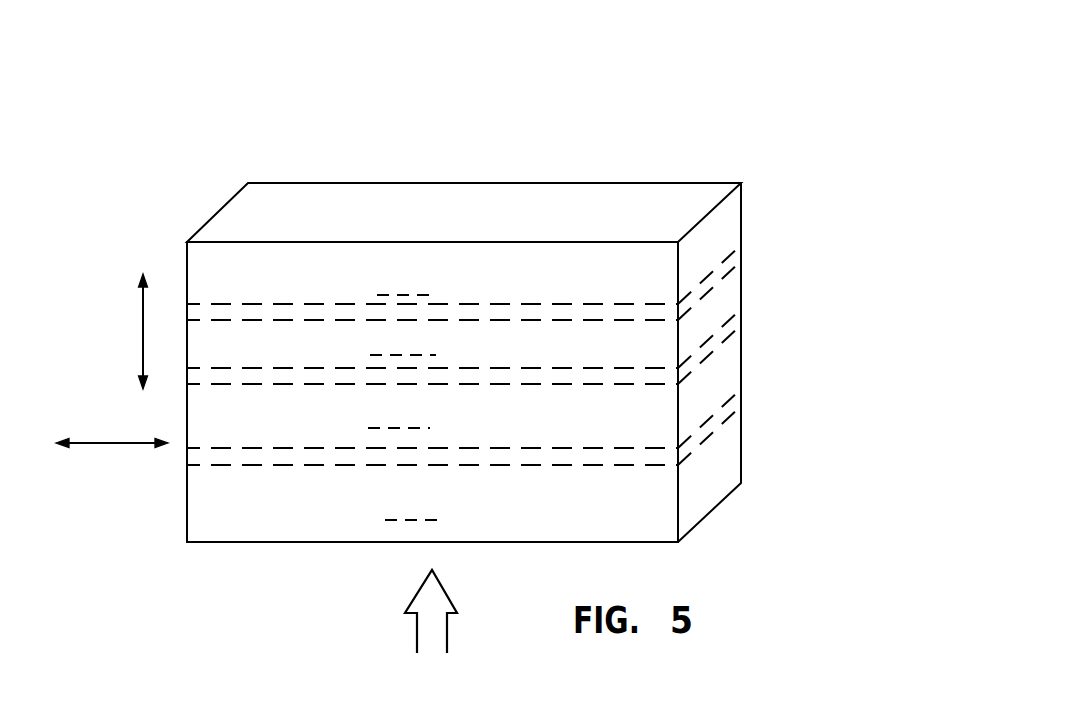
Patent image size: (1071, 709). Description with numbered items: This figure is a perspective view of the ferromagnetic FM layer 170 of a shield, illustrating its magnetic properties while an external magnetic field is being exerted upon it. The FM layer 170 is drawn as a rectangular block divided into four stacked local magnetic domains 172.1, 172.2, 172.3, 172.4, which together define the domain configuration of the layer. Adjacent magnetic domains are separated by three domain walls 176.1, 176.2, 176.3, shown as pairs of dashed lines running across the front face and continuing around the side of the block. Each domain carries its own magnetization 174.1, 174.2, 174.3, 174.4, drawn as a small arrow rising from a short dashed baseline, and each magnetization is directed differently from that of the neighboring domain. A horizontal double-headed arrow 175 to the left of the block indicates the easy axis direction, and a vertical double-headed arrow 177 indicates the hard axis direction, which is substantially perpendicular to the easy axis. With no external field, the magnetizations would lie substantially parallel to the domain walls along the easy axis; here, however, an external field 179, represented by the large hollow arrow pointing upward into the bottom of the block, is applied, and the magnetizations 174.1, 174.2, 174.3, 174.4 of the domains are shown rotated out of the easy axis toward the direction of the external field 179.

The FM layer 170 is at (684, 153).
The local magnetic domain 172.1 is at (636, 280).
The local magnetic domain 172.2 is at (634, 352).
The local magnetic domain 172.3 is at (636, 425).
The local magnetic domain 172.4 is at (656, 530).
The magnetization 174.1 is at (378, 295).
The magnetization 174.2 is at (390, 329).
The magnetization 174.3 is at (368, 428).
The magnetization 174.4 is at (401, 492).
The domain wall 176.1 is at (220, 305).
The domain wall 176.2 is at (220, 368).
The domain wall 176.3 is at (220, 449).
The arrow indicating easy axis direction 175 is at (112, 429).
The arrow indicating hard axis direction 177 is at (121, 331).
The external field 179 is at (417, 611).